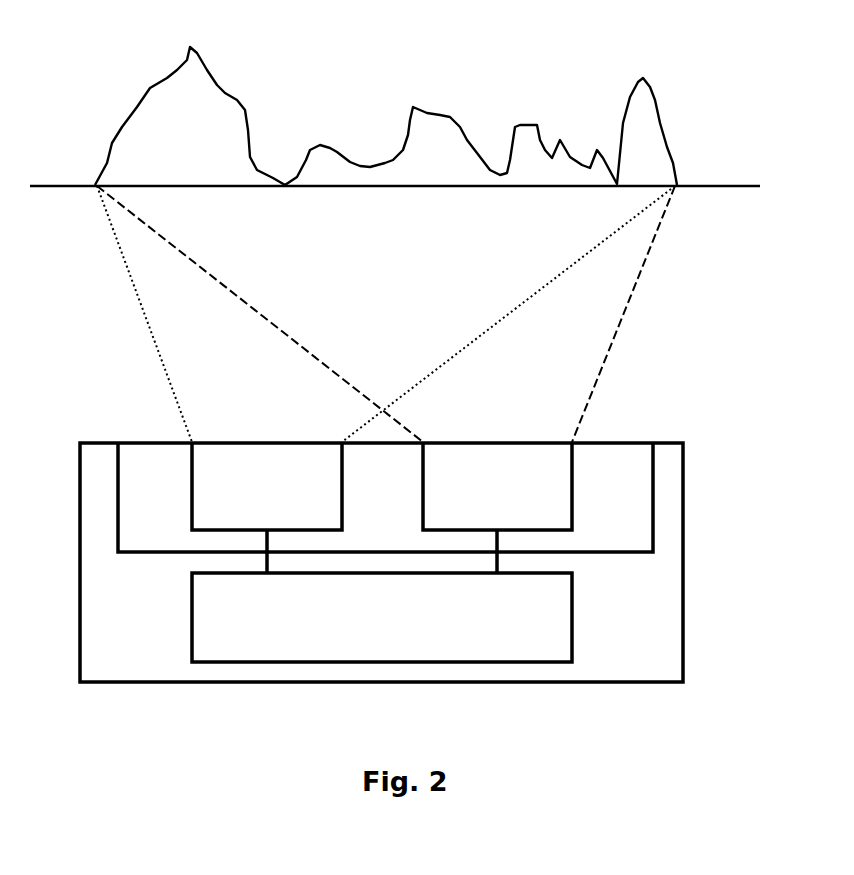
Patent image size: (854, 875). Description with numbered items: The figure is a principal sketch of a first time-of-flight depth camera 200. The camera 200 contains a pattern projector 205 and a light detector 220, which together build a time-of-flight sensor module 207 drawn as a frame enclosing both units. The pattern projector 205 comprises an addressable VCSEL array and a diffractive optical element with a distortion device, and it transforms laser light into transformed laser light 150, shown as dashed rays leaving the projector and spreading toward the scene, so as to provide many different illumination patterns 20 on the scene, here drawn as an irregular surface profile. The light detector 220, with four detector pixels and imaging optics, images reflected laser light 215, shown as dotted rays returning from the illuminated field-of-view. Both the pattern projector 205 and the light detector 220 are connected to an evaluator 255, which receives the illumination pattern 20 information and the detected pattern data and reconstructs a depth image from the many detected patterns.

The illumination pattern 20 is at (653, 90).
The transformed laser light 150 is at (628, 307).
The reflected laser light 215 is at (150, 327).
The time-of-flight depth camera 200 is at (685, 620).
The time-of-flight sensor module 207 is at (655, 497).
The light detector 220 is at (207, 470).
The pattern projector 205 is at (562, 482).
The evaluator 255 is at (560, 628).